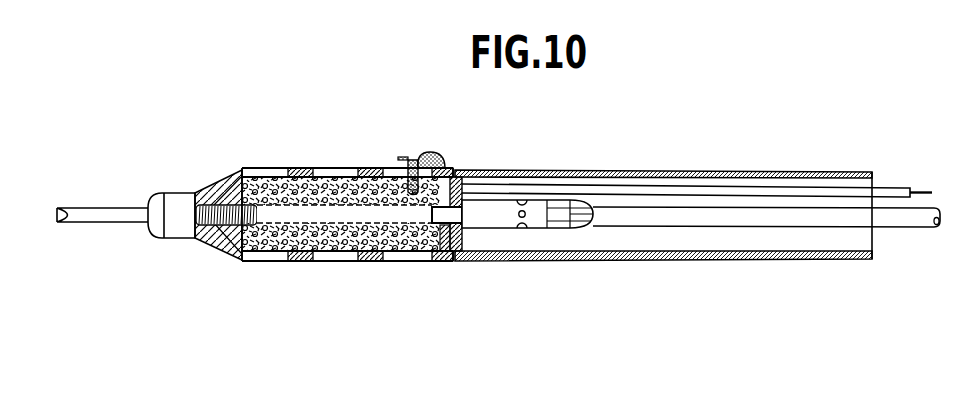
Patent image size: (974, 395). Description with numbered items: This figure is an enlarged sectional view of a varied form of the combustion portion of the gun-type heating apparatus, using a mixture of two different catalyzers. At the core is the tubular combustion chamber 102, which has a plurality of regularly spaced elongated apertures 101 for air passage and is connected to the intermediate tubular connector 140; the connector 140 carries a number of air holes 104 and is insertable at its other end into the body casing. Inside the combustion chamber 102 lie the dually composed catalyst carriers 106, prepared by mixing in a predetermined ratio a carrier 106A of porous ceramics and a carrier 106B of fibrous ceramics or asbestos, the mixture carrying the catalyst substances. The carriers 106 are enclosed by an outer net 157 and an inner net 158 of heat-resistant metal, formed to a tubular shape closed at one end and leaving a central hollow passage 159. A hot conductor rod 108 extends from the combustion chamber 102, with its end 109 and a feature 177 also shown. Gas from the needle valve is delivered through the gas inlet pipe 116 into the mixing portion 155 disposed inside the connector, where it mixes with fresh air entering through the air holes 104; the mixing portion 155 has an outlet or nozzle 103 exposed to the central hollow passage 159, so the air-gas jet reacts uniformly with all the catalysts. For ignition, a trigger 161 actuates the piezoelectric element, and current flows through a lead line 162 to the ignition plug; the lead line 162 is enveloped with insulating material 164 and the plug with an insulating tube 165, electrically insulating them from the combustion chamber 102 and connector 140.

The elongated apertures 101 is at (265, 166).
The tubular combustion chamber 102 is at (302, 166).
The outlet or nozzle 103 is at (447, 224).
The air holes 104 is at (581, 170).
The dually composed catalyst carriers 106 is at (226, 215).
The carrier of porous ceramics 106A is at (263, 240).
The carrier of fibrous ceramics or asbestos 106B is at (367, 230).
The hot conductor rod 108 is at (105, 208).
The soldering tip end 109 is at (75, 218).
The gas inlet pipe 116 is at (915, 221).
The intermediate tubular connector 140 is at (712, 176).
The mixing portion 155 is at (500, 223).
The outer net 157 is at (325, 182).
The inner net 158 is at (342, 202).
The central hollow passage 159 is at (412, 215).
The trigger 161 is at (932, 190).
The lead line 162 is at (402, 158).
The insulating material 164 is at (442, 158).
The insulating tube 165 is at (900, 189).
The terminal hole 177 is at (525, 216).